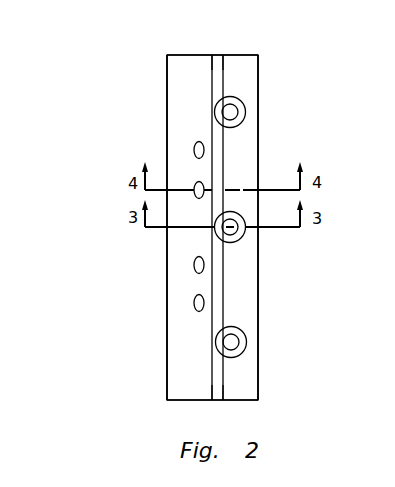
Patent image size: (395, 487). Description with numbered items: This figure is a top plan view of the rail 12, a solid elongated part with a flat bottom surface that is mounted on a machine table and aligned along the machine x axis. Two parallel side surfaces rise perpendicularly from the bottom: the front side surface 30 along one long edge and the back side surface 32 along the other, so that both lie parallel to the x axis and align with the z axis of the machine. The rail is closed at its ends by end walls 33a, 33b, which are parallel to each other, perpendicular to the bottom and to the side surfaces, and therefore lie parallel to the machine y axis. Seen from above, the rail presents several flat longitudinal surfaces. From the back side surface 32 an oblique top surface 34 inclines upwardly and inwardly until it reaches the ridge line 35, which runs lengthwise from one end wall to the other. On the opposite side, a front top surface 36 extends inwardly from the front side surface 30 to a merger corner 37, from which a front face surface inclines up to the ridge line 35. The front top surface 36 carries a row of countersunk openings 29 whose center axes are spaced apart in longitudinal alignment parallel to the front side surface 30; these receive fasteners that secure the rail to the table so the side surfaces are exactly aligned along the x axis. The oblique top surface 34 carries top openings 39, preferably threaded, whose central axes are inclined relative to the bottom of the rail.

The rail 12 is at (124, 100).
The countersunk openings 29 is at (245, 105).
The front side surface 30 is at (259, 333).
The back side surface 32 is at (167, 295).
The end wall 33a is at (220, 54).
The end wall 33b is at (232, 401).
The oblique top surface 34 is at (178, 90).
The ridge line 35 is at (213, 280).
The front top surface 36 is at (244, 74).
The merger corner 37 is at (225, 163).
The top openings 39 is at (196, 142).